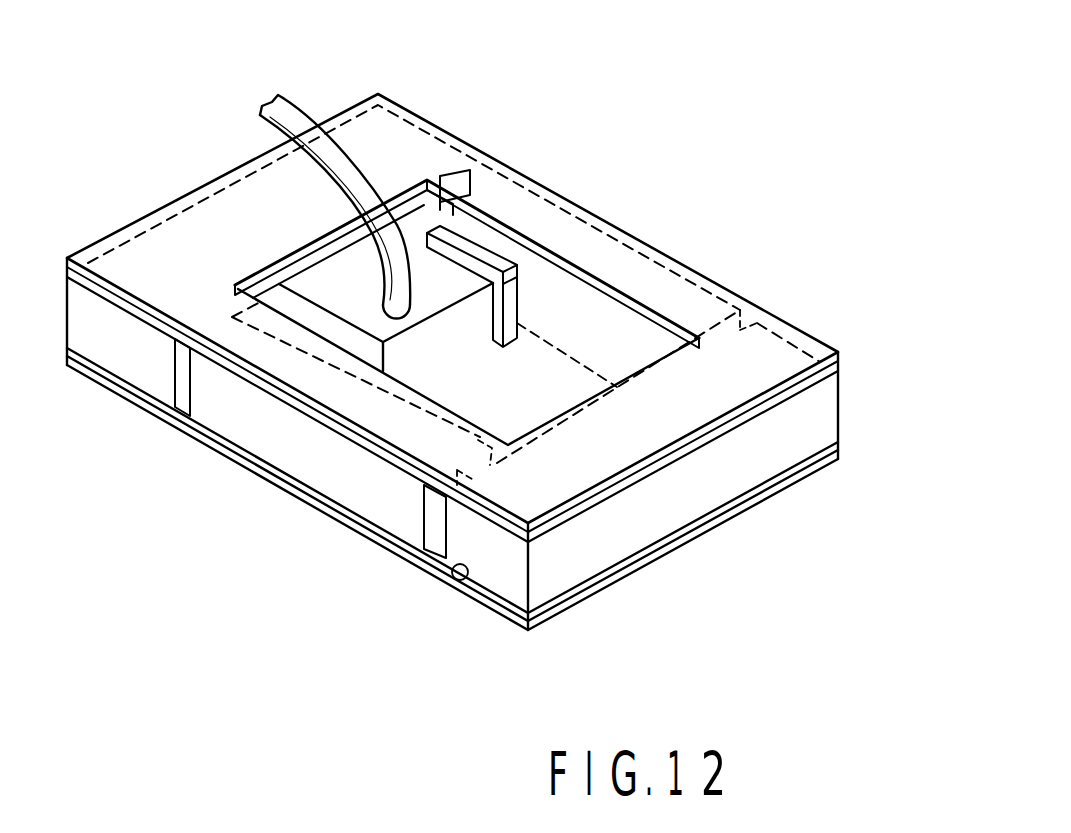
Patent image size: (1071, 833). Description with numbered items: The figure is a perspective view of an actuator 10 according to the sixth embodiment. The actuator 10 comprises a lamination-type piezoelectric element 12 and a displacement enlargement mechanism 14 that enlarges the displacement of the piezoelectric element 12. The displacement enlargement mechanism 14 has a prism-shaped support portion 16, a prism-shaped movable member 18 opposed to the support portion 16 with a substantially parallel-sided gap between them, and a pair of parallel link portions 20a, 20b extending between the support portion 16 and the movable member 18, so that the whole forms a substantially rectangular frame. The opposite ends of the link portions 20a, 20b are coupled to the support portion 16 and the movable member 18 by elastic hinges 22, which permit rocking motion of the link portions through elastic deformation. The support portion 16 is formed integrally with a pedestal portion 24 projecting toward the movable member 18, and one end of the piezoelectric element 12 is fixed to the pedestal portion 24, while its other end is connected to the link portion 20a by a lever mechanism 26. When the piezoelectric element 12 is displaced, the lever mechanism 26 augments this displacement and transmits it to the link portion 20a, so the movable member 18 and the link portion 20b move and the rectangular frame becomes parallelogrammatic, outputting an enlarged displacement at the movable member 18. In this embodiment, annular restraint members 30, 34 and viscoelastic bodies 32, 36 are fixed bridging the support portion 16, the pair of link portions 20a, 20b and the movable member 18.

The actuator 10 is at (428, 105).
The piezoelectric element 12 is at (368, 310).
The displacement enlargement mechanism 14 is at (185, 449).
The support portion 16 is at (197, 231).
The movable member 18 is at (708, 492).
The link portion 20a is at (580, 220).
The link portion 20b is at (287, 460).
The elastic hinge 22 is at (458, 190).
The pedestal portion 24 is at (340, 337).
The lever mechanism 26 is at (500, 255).
The annular restraint member 30 is at (667, 280).
The viscoelastic body 32 is at (840, 368).
The restraint member 34 is at (395, 558).
The viscoelastic body 36 is at (455, 572).